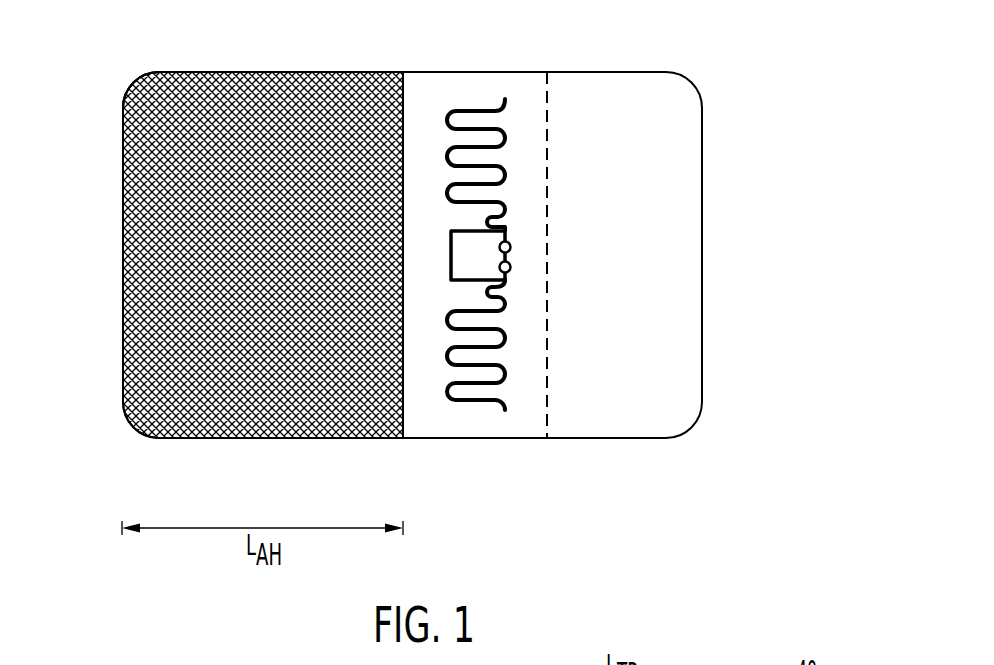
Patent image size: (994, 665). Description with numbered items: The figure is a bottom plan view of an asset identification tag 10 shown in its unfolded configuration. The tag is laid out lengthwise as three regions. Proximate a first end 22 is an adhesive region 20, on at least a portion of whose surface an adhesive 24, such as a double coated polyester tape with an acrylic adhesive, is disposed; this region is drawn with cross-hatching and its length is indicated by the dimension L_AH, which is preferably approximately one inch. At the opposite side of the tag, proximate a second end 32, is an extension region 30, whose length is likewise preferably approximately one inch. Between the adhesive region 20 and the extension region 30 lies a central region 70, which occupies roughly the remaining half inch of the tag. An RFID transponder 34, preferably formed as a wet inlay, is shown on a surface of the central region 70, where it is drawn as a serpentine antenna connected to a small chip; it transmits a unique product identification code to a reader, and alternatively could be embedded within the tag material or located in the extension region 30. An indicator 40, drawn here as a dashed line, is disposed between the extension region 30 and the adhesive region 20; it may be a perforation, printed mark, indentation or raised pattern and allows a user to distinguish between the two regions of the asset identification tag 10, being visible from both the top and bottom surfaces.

The asset identification tag 10 is at (750, 77).
The adhesive region 20 is at (403, 457).
The first end 22 is at (121, 245).
The adhesive 24 is at (142, 82).
The extension region 30 is at (702, 457).
The second end 32 is at (704, 240).
The RFID transponder 34 is at (475, 108).
The indicator 40 is at (546, 100).
The central region 70 is at (543, 457).